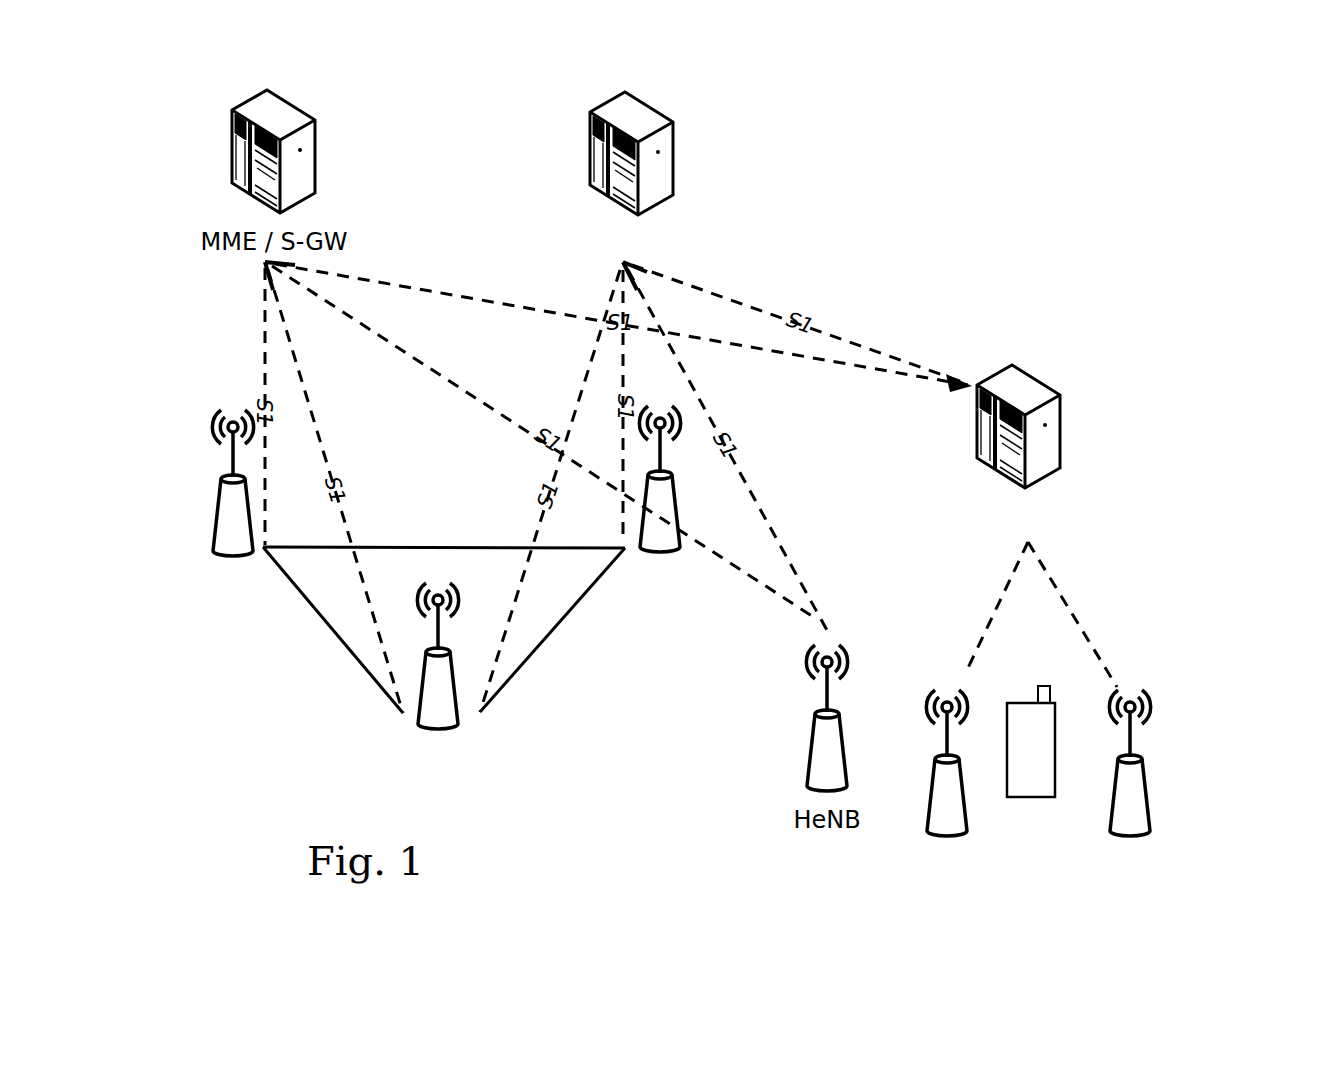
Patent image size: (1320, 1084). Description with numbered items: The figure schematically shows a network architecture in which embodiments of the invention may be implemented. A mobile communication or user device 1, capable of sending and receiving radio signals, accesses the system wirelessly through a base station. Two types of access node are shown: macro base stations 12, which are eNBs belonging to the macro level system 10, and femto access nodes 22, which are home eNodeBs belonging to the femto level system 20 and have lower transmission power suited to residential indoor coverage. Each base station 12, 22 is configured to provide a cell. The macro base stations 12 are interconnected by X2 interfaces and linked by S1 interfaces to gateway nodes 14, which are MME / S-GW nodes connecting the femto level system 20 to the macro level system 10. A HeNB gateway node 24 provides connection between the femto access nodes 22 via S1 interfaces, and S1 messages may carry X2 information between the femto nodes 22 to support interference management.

The user device 1 is at (1031, 771).
The macro level system 10 is at (306, 668).
The macro base station 12 is at (418, 720).
The gateway node 14 is at (670, 168).
The femto level system 20 is at (1158, 604).
The femto access node 22 is at (1147, 776).
The HeNB gateway node 24 is at (1062, 385).